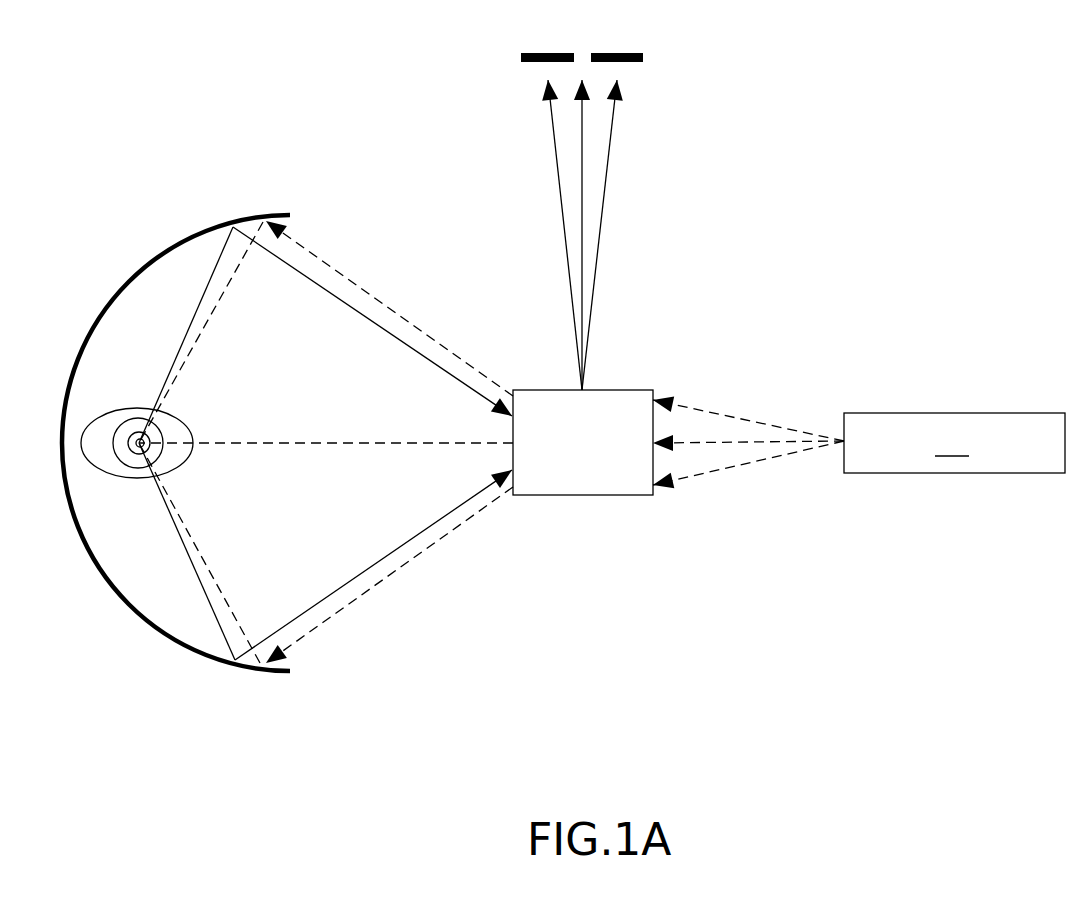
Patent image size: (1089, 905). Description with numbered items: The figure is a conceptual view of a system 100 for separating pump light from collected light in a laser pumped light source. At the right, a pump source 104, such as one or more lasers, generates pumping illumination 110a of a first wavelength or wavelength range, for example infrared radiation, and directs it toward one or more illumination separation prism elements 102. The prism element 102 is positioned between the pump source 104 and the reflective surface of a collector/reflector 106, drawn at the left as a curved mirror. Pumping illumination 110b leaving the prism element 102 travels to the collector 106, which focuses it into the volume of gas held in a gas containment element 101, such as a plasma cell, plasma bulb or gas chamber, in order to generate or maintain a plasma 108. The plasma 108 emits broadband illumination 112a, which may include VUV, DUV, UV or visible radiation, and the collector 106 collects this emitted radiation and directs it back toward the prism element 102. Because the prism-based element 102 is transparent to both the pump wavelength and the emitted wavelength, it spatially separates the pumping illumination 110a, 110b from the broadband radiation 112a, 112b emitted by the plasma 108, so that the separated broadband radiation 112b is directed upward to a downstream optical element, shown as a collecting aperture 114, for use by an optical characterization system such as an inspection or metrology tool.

The system 100 is at (241, 91).
The gas containment element 101 is at (138, 407).
The illumination separation prism element 102 is at (623, 390).
The pump source 104 is at (954, 443).
The collector/reflector 106 is at (120, 592).
The plasma 108 is at (143, 434).
The pumping illumination 110a is at (757, 418).
The pumping illumination 110b is at (390, 310).
The broadband illumination 112a is at (373, 326).
The broadband radiation 112b is at (606, 185).
The collecting aperture 114 is at (617, 52).